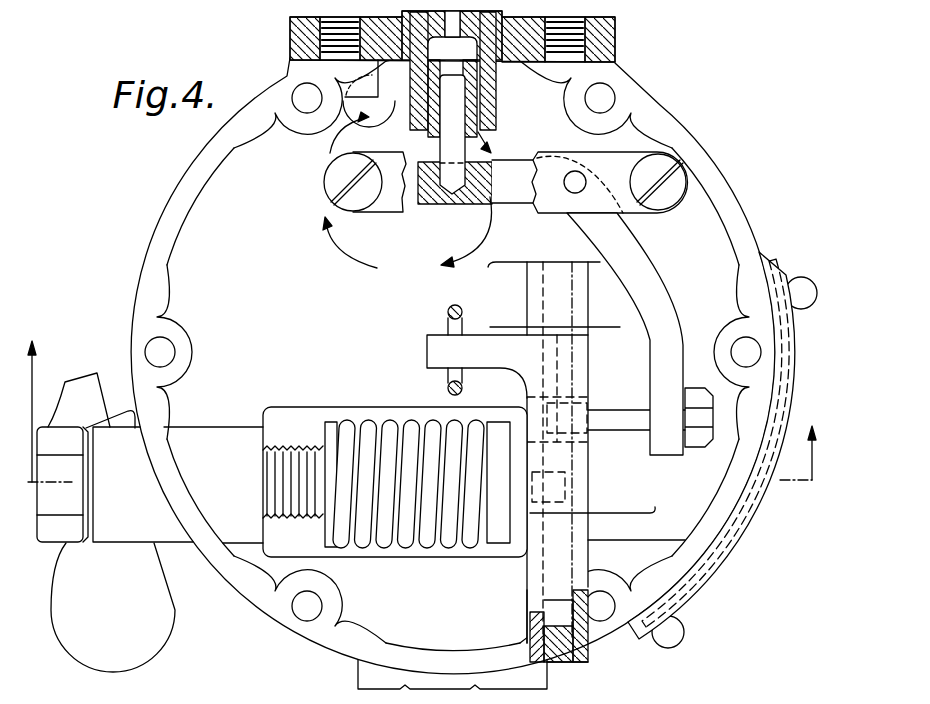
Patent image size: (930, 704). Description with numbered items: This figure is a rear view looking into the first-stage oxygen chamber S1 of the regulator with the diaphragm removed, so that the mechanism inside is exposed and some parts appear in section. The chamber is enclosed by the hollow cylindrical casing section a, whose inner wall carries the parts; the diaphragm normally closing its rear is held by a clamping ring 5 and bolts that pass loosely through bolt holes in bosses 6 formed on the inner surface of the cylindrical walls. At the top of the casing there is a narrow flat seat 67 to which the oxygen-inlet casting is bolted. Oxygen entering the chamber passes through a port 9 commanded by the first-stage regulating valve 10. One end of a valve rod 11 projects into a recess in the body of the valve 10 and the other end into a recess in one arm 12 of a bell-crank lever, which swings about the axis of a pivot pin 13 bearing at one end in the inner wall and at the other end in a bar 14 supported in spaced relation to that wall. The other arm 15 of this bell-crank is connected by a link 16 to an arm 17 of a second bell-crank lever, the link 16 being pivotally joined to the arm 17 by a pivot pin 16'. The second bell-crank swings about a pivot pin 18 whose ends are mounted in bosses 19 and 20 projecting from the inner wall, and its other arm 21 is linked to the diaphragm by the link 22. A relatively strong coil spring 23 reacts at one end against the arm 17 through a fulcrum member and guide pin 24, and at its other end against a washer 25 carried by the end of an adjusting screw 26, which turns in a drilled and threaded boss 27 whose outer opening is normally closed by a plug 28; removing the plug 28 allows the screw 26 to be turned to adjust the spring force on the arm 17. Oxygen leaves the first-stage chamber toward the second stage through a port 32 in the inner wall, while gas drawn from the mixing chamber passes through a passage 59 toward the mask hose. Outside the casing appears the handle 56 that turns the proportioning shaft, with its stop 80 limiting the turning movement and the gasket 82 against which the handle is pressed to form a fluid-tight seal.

The flat seat 67 is at (603, 28).
The port 9 is at (448, 20).
The first-stage regulating valve 10 is at (480, 97).
The valve rod 11 is at (455, 117).
The arm of bell-crank lever 12 is at (466, 205).
The bar 14 is at (557, 152).
The pivot pin 13 is at (572, 189).
The port 32 is at (407, 164).
The bosses 6 is at (342, 607).
The casing section a is at (352, 652).
The boss 19 is at (528, 290).
The boss 20 is at (530, 581).
The pivot pin 18 is at (553, 606).
The passage 59 is at (545, 680).
The arm of second bell-crank lever 17 is at (590, 500).
The pivot pin 16' is at (598, 352).
The arm of second bell-crank lever 21 is at (473, 340).
The link 22 is at (448, 390).
The link 16 is at (650, 424).
The arm of bell-crank lever 15 is at (652, 370).
The boss 27 is at (240, 427).
The adjusting screw 26 is at (287, 450).
The washer 25 is at (330, 423).
The coil spring 23 is at (432, 542).
The fulcrum member and guide pin 24 is at (470, 538).
The first-stage oxygen chamber S1 is at (330, 339).
The plug 28 is at (73, 503).
The stop 80 is at (96, 379).
The gasket 82 is at (130, 410).
The handle 56 is at (90, 650).
The clamping ring 5 is at (422, 450).